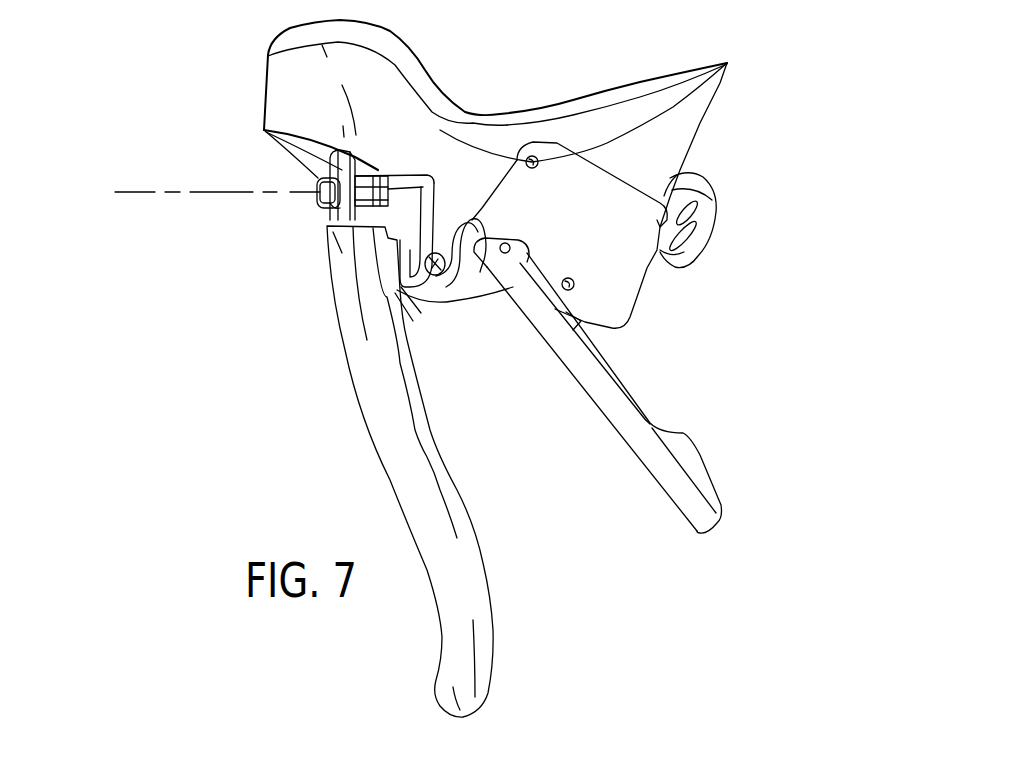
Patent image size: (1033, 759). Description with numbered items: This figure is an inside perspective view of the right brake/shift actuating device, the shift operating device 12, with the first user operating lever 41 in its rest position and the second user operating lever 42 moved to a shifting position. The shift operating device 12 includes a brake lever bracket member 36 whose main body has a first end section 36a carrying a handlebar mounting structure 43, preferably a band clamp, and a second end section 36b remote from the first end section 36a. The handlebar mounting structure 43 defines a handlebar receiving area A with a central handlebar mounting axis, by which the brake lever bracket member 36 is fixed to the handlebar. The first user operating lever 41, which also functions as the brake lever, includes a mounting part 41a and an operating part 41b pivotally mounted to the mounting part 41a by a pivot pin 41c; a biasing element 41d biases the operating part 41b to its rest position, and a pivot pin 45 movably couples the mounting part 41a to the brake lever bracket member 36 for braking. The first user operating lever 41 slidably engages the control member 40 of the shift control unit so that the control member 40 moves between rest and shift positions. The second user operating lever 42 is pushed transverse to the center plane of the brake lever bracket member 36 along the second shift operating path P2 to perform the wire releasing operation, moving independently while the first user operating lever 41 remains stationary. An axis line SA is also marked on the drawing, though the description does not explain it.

The shift operating device 12 is at (232, 53).
The brake lever bracket member 36 is at (502, 102).
The first end section 36a is at (660, 138).
The second end section 36b is at (393, 143).
The control member 40 is at (423, 320).
The first user operating lever 41 is at (366, 455).
The mounting part 41a is at (333, 163).
The operating part 41b is at (342, 253).
The pivot pin 41c is at (322, 200).
The biasing element 41d is at (366, 187).
The second user operating lever 42 is at (623, 400).
The handlebar mounting structure 43 is at (722, 188).
The pivot pin 45 is at (462, 294).
The pivot axis of brake lever SA is at (143, 190).
The handlebar receiving area A is at (664, 272).
The second shift operating plane or path P2 is at (707, 567).